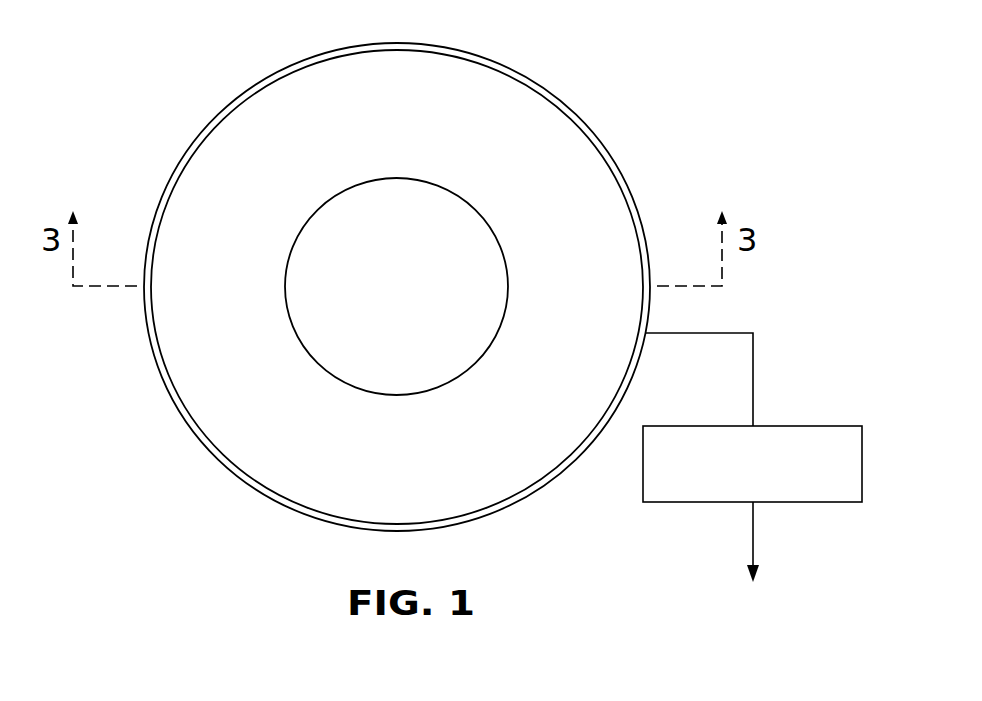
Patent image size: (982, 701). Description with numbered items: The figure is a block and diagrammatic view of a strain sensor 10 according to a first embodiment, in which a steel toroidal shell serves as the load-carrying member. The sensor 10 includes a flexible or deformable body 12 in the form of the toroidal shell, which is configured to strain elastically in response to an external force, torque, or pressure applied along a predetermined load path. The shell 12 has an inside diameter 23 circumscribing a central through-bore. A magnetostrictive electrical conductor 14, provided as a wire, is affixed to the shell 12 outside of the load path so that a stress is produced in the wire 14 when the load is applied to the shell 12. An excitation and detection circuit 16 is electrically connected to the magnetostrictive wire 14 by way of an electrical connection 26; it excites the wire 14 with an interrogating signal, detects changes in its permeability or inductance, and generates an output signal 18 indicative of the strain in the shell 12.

The strain sensor 10 is at (624, 105).
The body 12 is at (317, 148).
The magnetostrictive electrical conductor 14 is at (552, 493).
The excitation and detection circuit 16 is at (675, 502).
The output signal 18 is at (754, 540).
The inside diameter 23 is at (330, 198).
The electrical connection 26 is at (737, 332).